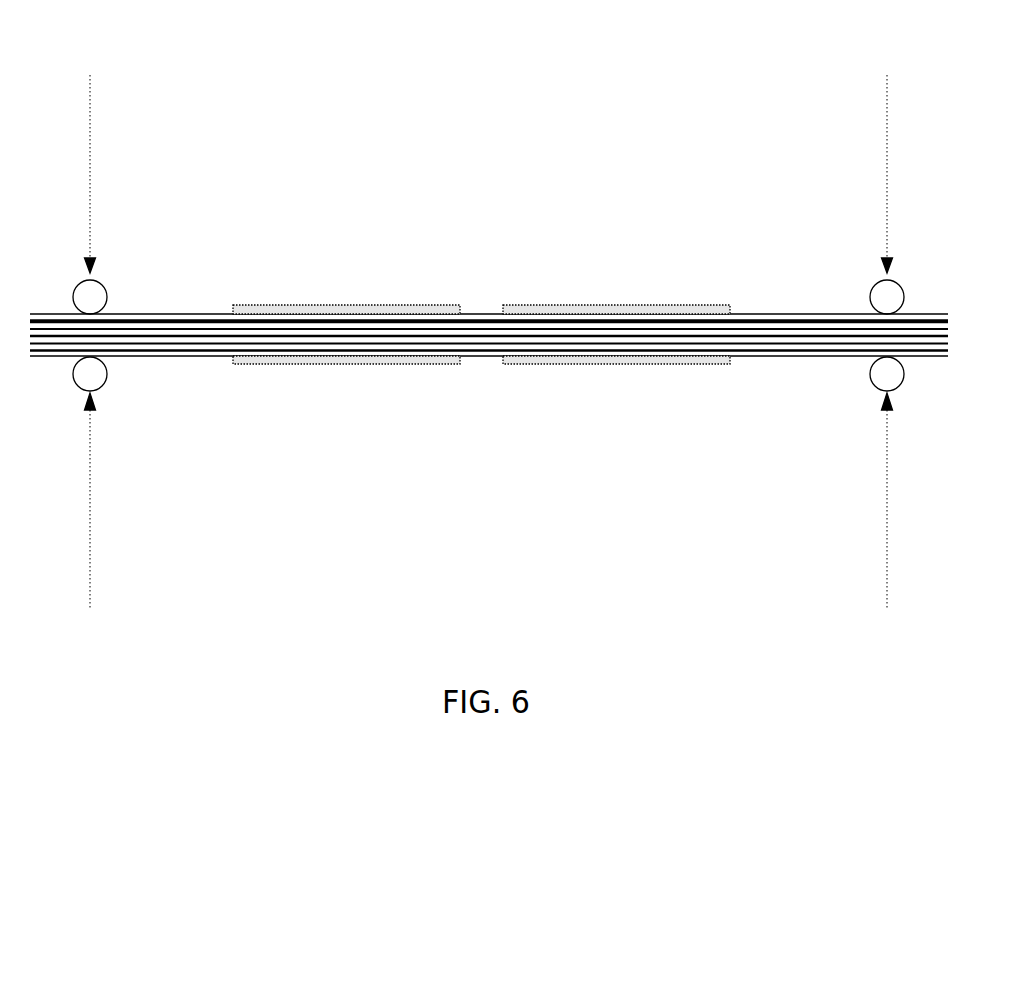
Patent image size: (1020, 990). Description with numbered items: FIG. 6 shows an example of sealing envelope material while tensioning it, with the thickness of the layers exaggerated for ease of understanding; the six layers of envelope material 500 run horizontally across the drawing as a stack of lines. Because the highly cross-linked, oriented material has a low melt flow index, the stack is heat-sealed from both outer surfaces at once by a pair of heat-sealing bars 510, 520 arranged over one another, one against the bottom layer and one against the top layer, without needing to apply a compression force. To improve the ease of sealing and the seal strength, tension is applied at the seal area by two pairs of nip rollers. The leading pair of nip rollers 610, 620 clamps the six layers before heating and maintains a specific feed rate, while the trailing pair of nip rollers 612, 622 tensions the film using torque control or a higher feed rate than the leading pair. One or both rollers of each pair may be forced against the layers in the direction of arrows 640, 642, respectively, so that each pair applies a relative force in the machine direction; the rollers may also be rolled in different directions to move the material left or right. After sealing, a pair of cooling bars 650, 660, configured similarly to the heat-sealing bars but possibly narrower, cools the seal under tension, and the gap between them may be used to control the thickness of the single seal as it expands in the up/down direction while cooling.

The laminated stack 500 is at (489, 335).
The heat-sealing bar 510 is at (333, 364).
The heat-sealing bar 520 is at (362, 305).
The nip roller 610 is at (107, 383).
The nip roller 612 is at (870, 383).
The nip roller 620 is at (107, 293).
The nip roller 622 is at (870, 290).
The arrow 640 is at (488, 500).
The arrow 642 is at (488, 174).
The cooling bar 650 is at (602, 364).
The cooling bar 660 is at (632, 305).